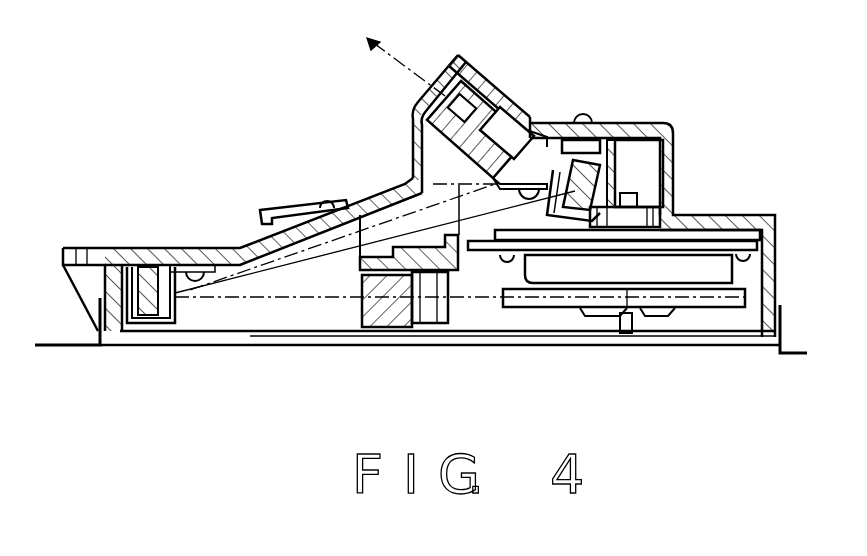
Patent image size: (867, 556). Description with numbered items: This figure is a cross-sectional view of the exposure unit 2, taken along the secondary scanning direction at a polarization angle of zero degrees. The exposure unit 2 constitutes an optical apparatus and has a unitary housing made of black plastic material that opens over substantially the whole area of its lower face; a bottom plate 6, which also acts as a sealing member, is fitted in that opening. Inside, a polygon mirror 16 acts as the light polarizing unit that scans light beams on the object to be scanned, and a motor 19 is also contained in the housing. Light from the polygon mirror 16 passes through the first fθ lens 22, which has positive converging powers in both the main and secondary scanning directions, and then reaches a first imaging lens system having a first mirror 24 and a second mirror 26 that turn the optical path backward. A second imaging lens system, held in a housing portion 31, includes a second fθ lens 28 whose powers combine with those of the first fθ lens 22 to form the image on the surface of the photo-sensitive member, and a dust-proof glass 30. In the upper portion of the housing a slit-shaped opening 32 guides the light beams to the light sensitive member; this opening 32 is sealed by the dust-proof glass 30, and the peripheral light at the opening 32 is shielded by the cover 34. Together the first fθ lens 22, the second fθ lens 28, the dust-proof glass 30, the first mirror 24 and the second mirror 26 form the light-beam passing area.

The exposure unit 2 is at (170, 227).
The bottom plate 6 is at (345, 337).
The polygon mirror 16 is at (567, 300).
The motor 19 is at (732, 275).
The first fθ lens 22 is at (393, 330).
The first mirror 24 is at (148, 312).
The second mirror 26 is at (613, 140).
The second fθ lens 28 is at (492, 87).
The dust-proof glass 30 is at (443, 80).
The housing portion 31 is at (435, 145).
The slit-shaped opening 32 is at (556, 165).
The cover 34 is at (523, 118).